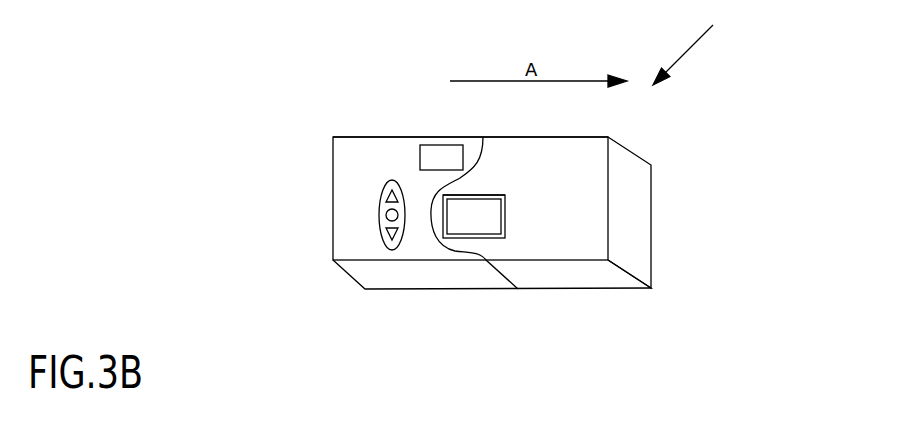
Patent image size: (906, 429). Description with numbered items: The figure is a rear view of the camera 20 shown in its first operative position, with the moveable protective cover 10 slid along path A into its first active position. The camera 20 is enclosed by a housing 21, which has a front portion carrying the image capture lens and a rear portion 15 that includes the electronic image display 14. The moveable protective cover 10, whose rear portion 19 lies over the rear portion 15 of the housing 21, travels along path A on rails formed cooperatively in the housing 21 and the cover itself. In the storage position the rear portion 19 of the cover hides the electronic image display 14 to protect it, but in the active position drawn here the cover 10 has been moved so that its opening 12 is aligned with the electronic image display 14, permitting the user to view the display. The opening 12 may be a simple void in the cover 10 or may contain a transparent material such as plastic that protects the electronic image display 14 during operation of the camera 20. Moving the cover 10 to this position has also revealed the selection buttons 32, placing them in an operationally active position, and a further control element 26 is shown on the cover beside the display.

The moveable protective cover 10 is at (594, 283).
The opening 12 is at (480, 199).
The electronic image display 14 is at (493, 222).
The rear portion 15 is at (350, 152).
The rear portion of the moveable protective cover 19 is at (578, 152).
The camera 20 is at (697, 43).
The housing 21 is at (642, 226).
The shutter button 26 is at (433, 153).
The selection buttons 32 is at (380, 218).